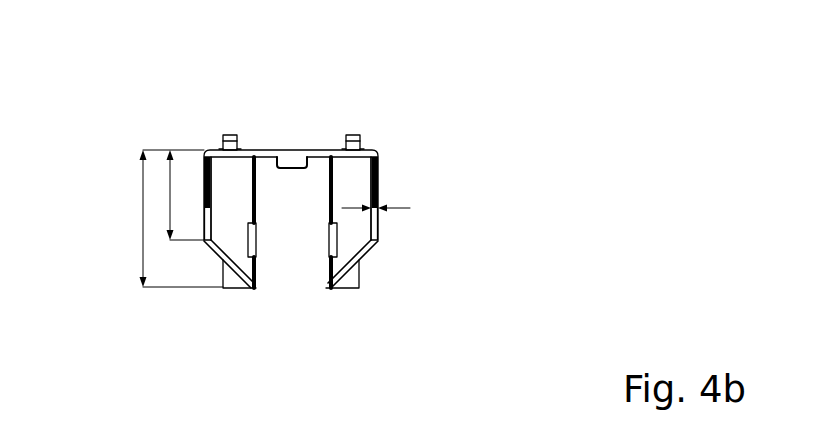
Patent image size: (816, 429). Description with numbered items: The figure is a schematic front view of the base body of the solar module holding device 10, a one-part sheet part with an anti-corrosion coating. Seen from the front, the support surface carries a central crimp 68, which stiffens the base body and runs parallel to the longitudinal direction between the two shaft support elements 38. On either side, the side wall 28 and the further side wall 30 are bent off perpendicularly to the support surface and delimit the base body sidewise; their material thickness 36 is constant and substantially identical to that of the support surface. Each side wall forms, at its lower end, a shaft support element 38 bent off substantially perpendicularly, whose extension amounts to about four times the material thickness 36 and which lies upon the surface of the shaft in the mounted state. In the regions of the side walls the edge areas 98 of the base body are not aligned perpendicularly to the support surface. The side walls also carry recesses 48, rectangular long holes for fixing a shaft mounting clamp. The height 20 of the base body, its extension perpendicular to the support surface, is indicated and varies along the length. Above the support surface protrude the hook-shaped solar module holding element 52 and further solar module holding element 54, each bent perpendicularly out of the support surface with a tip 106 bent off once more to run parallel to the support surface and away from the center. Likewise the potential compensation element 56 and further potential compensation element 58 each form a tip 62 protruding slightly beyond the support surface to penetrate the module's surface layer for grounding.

The solar module holding device 10 is at (550, 97).
The height 20 is at (170, 195).
The side wall 28 is at (353, 177).
The further side wall 30 is at (229, 190).
The material thickness 36 is at (410, 208).
The shaft support element 38 is at (232, 282).
The recess 48 is at (327, 243).
The solar module holding element 52 is at (365, 143).
The further solar module holding element 54 is at (218, 146).
The potential compensation element 56 is at (341, 138).
The further potential compensation element 58 is at (237, 131).
The tip 62 is at (240, 148).
The crimp 68 is at (293, 160).
The edge area 98 is at (367, 252).
The tip 106 is at (221, 139).